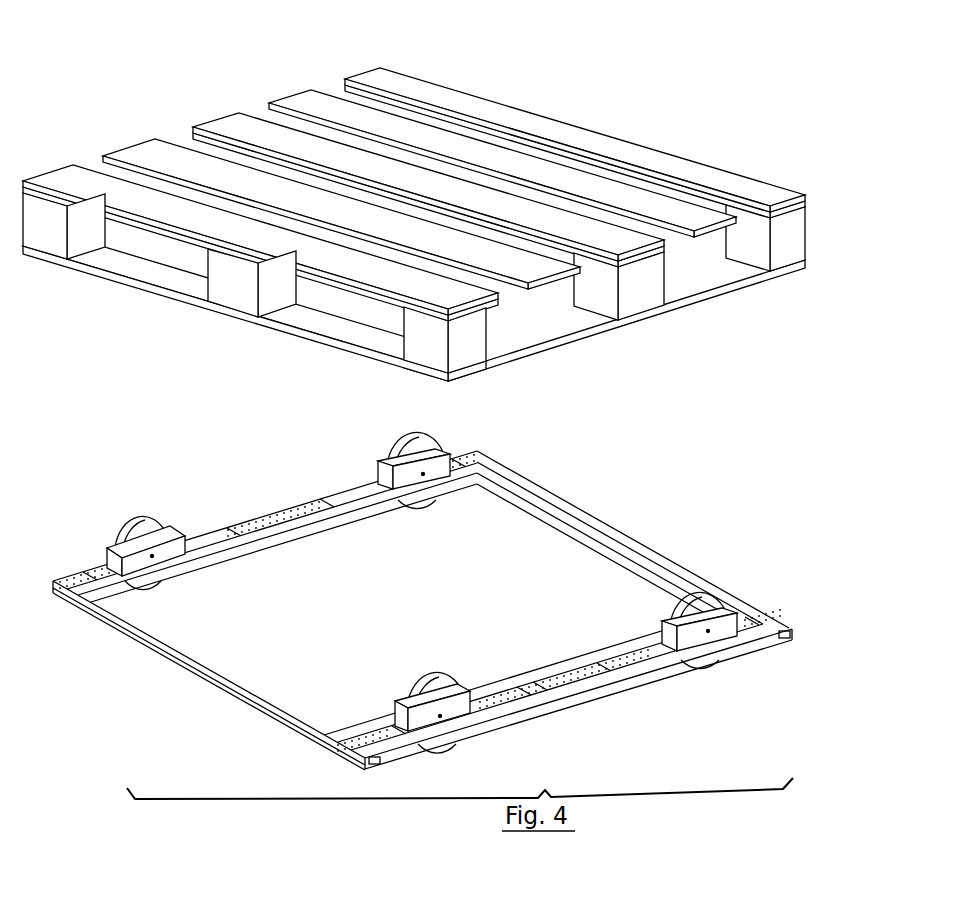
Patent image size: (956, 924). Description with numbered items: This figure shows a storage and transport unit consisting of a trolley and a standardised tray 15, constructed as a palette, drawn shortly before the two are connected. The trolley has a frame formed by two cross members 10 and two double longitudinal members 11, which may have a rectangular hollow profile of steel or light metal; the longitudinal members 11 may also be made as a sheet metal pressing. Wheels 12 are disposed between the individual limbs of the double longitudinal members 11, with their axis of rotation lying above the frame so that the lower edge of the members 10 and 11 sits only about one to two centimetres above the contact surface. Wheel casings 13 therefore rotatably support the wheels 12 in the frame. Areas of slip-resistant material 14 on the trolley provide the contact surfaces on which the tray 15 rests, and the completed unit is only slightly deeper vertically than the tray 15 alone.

The cross members 10 is at (615, 532).
The double longitudinal members 11 is at (370, 500).
The wheels 12 is at (430, 450).
The wheel casings 13 is at (173, 553).
The slip-resistant material 14 is at (287, 512).
The tray 15 is at (521, 99).